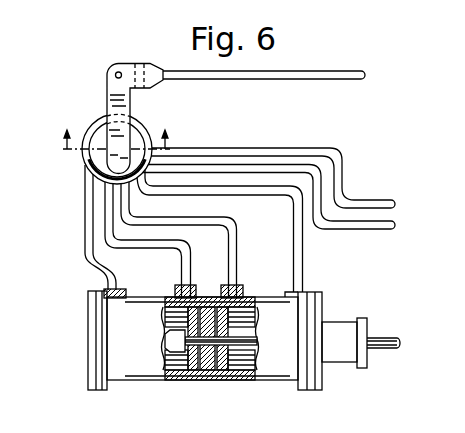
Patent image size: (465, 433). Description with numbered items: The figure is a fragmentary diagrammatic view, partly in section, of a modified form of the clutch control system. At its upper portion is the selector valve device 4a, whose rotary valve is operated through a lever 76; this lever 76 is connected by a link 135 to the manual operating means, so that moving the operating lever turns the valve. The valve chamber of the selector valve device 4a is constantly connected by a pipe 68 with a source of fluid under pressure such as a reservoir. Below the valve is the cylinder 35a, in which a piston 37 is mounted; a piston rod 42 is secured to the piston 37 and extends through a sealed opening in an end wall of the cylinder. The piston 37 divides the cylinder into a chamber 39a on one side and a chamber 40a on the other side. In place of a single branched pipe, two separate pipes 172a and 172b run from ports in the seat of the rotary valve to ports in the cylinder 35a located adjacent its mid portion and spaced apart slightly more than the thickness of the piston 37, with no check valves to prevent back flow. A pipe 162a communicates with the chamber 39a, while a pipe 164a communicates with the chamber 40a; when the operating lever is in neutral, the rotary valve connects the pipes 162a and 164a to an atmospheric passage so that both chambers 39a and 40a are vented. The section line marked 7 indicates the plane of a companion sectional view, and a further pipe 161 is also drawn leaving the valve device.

The lever 76 is at (120, 98).
The selector valve device 4a is at (139, 117).
The section line 7- 7 is at (116, 139).
The link 135 is at (295, 80).
The pipe 68 is at (341, 175).
The tube 161 is at (393, 230).
The pipe 162a is at (86, 248).
The pipe 172a is at (184, 277).
The pipe 172b is at (263, 253).
The pipe 164a is at (299, 276).
The cylinder 35a is at (143, 381).
The chamber 39a is at (168, 380).
The piston 37 is at (200, 380).
The chamber 40a is at (246, 380).
The piston rod 42 is at (398, 346).